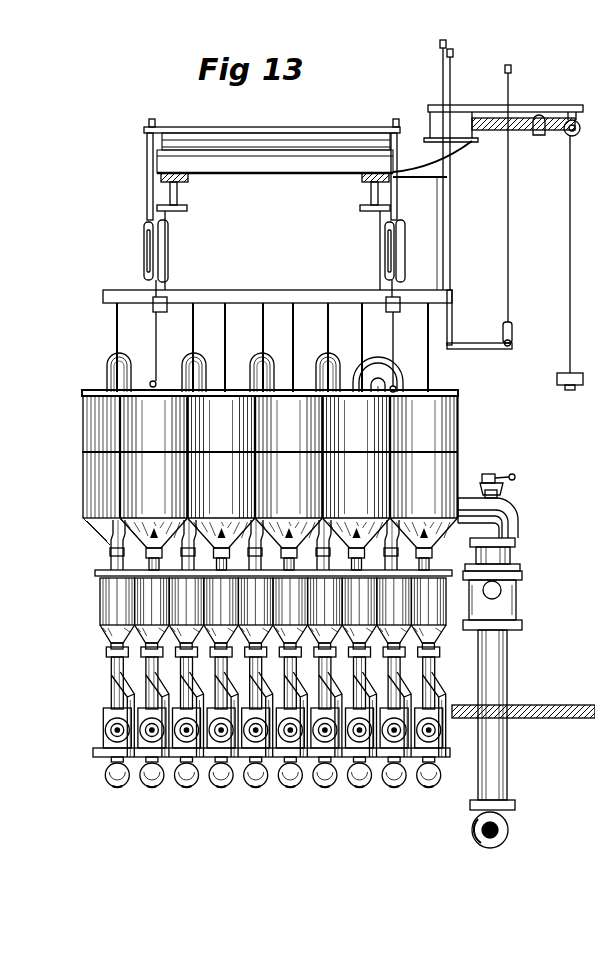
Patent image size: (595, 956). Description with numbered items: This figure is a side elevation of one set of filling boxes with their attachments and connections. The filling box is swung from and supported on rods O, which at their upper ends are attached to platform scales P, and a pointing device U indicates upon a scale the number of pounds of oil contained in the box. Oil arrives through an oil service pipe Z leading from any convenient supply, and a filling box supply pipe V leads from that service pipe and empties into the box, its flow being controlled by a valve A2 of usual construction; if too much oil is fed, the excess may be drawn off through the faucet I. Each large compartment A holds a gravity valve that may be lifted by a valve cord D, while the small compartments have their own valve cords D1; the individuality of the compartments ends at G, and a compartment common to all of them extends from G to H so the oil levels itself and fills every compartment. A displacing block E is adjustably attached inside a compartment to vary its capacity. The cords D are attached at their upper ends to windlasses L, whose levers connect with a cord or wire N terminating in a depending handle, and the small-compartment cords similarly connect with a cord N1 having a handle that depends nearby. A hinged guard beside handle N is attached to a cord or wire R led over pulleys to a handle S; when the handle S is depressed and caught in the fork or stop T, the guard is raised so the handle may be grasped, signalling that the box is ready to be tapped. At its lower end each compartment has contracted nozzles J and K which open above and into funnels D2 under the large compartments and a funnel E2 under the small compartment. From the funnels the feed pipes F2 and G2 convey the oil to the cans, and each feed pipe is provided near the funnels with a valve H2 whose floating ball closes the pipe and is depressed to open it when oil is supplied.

The platform scales P is at (273, 170).
The rods O is at (143, 227).
The cord or wire with depending handle N is at (443, 92).
The cord or wire with handle N1 is at (450, 79).
The cord or wire R is at (508, 217).
The handle S is at (512, 335).
The fork or stop T is at (508, 350).
The pointing device U is at (572, 391).
The windlasses L is at (250, 292).
The valve cord or wire D is at (225, 335).
The valve cords D1 is at (193, 333).
The filling box supply pipe V is at (126, 360).
The upper limit of common compartment H is at (270, 381).
The end of compartment individuality G is at (85, 454).
The compartment of filling box A is at (270, 483).
The contracted nozzle K is at (110, 552).
The contracted nozzle J is at (110, 574).
The funnels D2 is at (108, 602).
The funnel E2 is at (125, 605).
The feed pipes F2 is at (108, 690).
The feed pipes G2 is at (112, 676).
The valve H2 is at (103, 733).
The faucet I is at (520, 513).
The valve A2 is at (492, 600).
The displacing block E is at (523, 609).
The oil service pipe Z is at (509, 832).